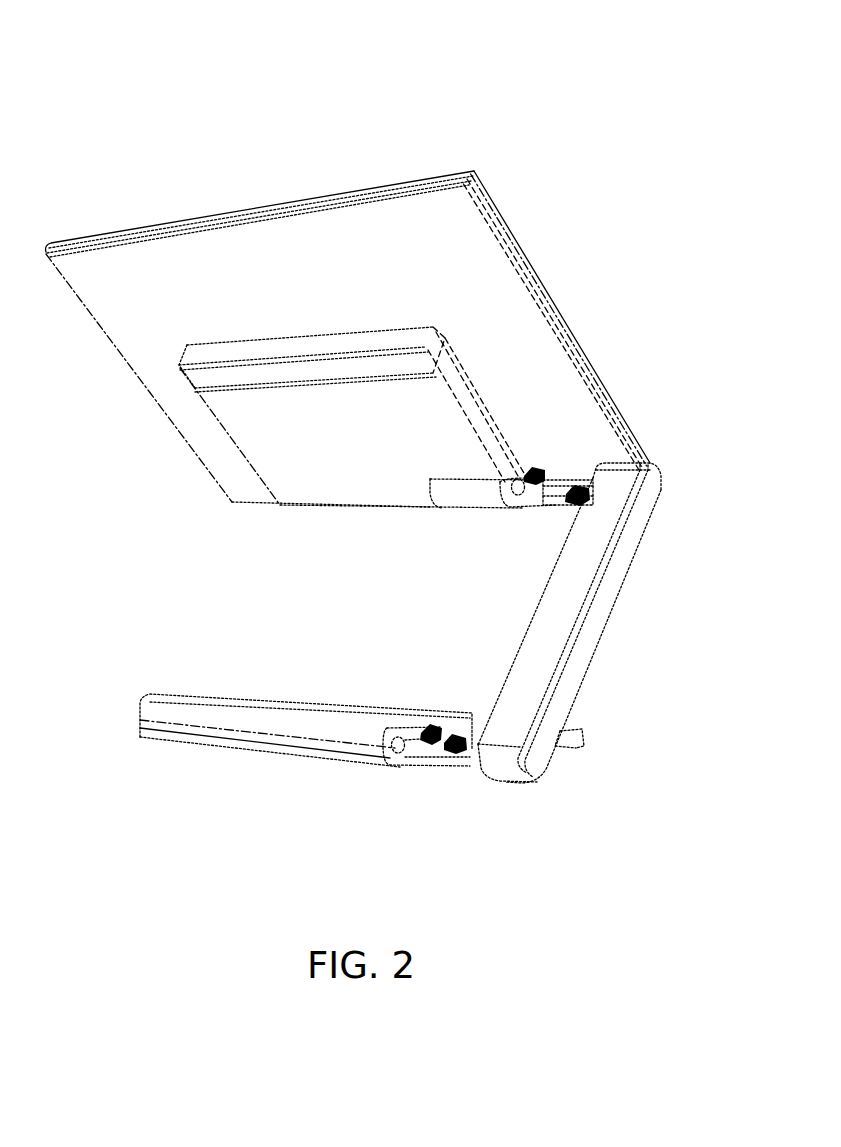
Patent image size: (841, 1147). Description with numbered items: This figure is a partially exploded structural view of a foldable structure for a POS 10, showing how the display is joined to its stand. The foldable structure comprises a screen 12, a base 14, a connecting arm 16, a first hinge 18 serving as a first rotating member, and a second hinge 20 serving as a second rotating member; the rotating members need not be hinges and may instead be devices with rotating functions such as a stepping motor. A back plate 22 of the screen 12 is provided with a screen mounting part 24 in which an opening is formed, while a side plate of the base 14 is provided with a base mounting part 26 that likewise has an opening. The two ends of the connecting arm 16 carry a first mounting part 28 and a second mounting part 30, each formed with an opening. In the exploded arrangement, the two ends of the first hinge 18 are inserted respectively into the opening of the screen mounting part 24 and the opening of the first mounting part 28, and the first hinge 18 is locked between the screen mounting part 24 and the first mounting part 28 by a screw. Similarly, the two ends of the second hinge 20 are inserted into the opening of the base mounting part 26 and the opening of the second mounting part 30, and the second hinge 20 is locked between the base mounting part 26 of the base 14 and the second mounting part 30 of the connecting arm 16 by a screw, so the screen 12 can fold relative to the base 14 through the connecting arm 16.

The POS 10 is at (252, 122).
The screen 12 is at (506, 230).
The base 14 is at (577, 742).
The connecting arm 16 is at (592, 623).
The first hinge 18 is at (560, 488).
The second hinge 20 is at (442, 748).
The back plate 22 is at (126, 323).
The screen mounting part 24 is at (460, 497).
The base mounting part 26 is at (283, 727).
The first mounting part 28 is at (628, 466).
The second mounting part 30 is at (500, 765).